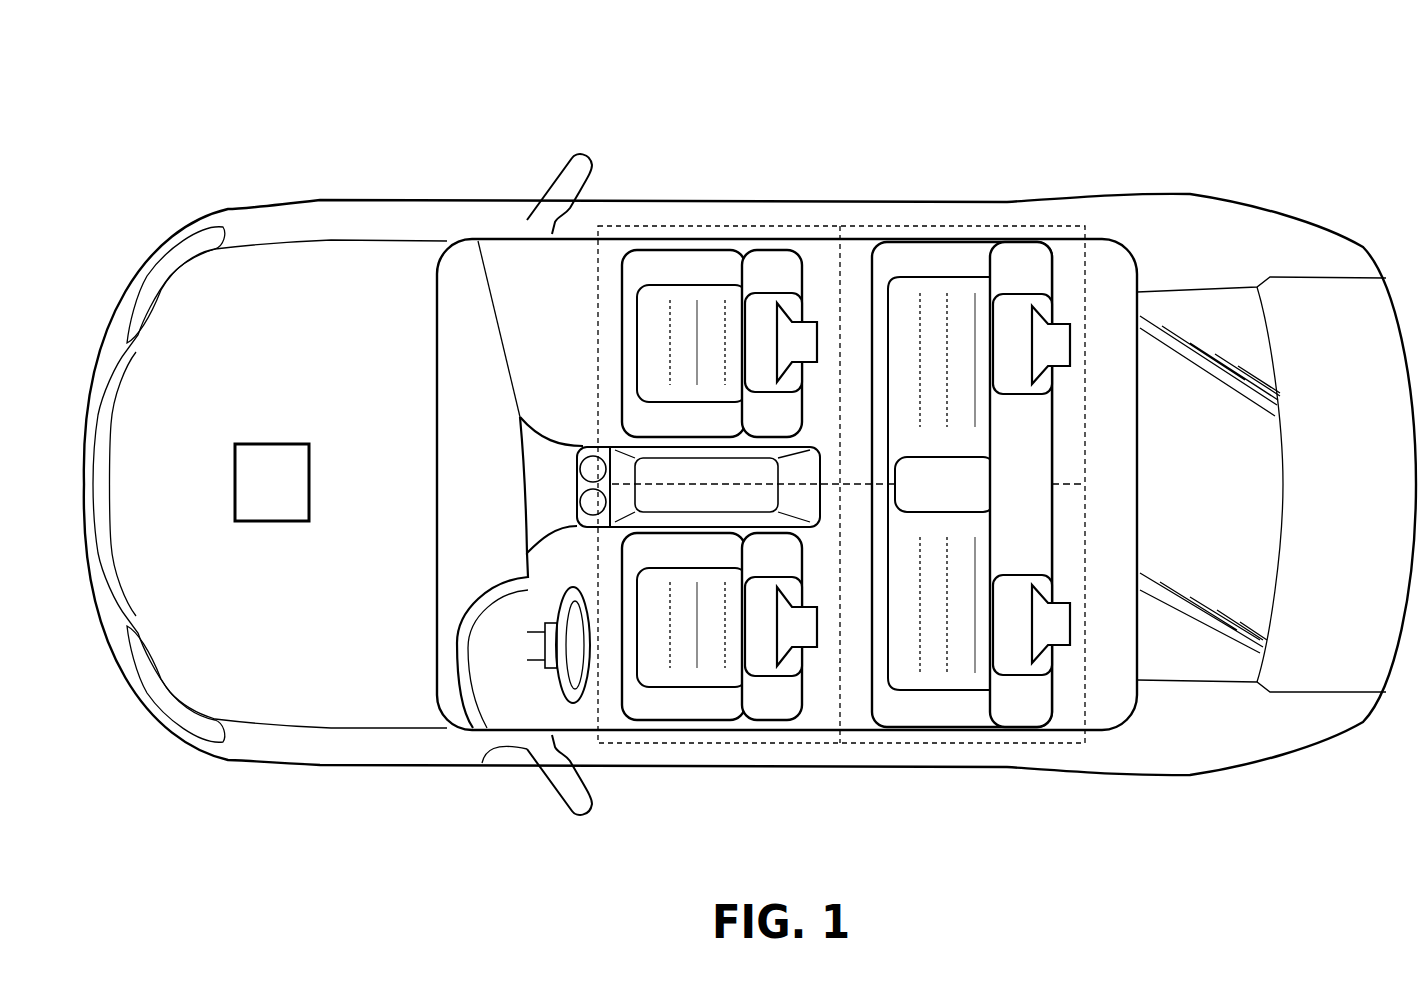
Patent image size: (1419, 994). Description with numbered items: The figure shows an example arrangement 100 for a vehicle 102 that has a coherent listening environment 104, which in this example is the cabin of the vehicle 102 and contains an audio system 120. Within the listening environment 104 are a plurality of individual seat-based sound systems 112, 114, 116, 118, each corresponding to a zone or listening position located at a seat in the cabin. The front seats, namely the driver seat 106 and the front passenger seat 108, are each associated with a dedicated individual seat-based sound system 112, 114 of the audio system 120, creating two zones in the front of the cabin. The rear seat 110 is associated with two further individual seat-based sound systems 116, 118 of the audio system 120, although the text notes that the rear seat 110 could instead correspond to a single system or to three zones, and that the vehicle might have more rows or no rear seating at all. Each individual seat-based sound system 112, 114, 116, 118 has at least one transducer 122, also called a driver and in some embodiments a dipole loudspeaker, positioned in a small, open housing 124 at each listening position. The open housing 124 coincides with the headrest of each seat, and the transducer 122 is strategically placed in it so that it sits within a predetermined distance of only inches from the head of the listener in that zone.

The arrangement 100 is at (219, 96).
The vehicle 102 is at (1233, 763).
The listening environment 104 is at (924, 226).
The driver seat 106 is at (680, 722).
The front passenger seat 108 is at (683, 250).
The rear seat 110 is at (1038, 513).
The individual seat-based sound system 112 is at (679, 637).
The individual seat-based sound system 114 is at (679, 354).
The individual seat-based sound system 116 is at (929, 624).
The individual seat-based sound system 118 is at (929, 369).
The audio system 120 is at (254, 494).
The transducer 122 is at (792, 304).
The open housing 124 is at (817, 340).